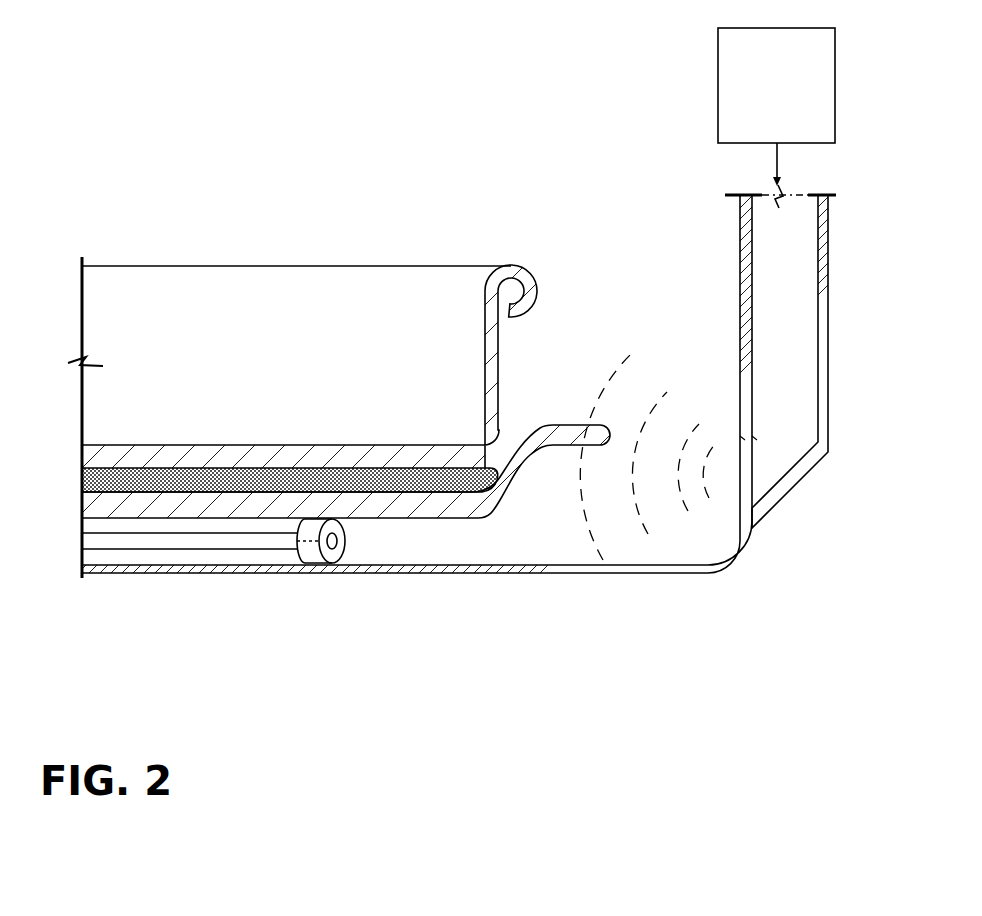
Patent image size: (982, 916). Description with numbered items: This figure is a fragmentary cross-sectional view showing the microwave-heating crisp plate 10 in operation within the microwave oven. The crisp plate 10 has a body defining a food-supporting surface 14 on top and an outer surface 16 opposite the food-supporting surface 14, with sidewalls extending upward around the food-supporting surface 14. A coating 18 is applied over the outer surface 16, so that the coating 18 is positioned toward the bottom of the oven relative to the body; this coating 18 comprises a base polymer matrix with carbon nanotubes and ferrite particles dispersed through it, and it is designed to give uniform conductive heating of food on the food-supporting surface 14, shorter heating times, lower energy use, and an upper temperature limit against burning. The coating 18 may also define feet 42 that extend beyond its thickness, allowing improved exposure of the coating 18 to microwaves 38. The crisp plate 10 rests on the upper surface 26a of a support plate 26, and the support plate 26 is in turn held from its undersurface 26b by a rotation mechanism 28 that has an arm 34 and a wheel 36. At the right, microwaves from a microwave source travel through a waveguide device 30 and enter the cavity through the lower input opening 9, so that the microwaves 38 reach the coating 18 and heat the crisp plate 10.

The microwave-heating crisp plate 10 is at (440, 212).
The food-supporting surface 14 is at (280, 445).
The outer surface 16 is at (82, 480).
The coating 18 is at (482, 492).
The support plate 26 is at (556, 425).
The upper surface of the support plate 26a is at (428, 470).
The undersurface of the support plate 26b is at (424, 506).
The rotation mechanism 28 is at (145, 570).
The waveguide device 30 is at (793, 331).
The arm 34 is at (195, 540).
The wheel 36 is at (312, 555).
The microwaves 38 is at (583, 523).
The feet 42 is at (458, 462).
The lower input opening 9 is at (745, 477).